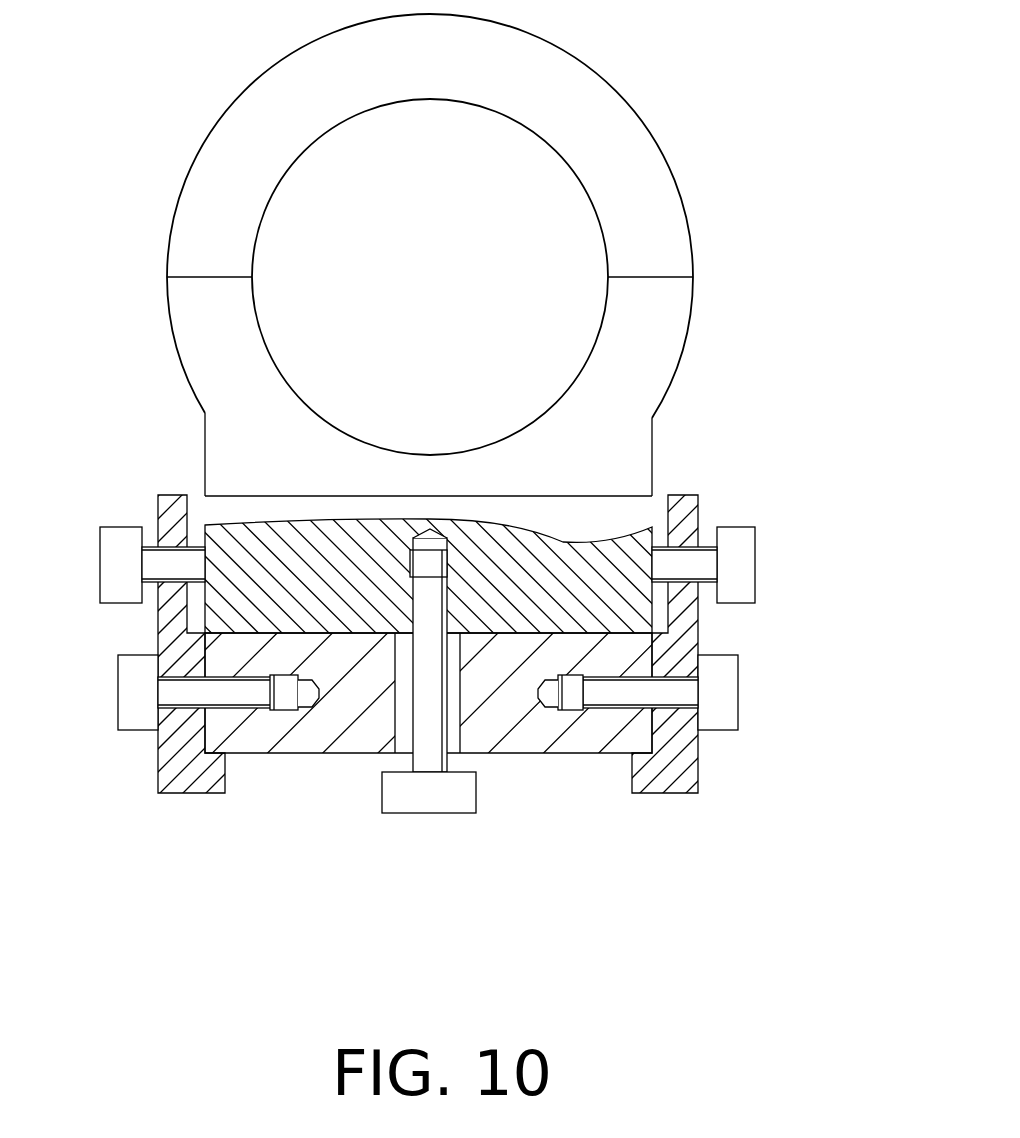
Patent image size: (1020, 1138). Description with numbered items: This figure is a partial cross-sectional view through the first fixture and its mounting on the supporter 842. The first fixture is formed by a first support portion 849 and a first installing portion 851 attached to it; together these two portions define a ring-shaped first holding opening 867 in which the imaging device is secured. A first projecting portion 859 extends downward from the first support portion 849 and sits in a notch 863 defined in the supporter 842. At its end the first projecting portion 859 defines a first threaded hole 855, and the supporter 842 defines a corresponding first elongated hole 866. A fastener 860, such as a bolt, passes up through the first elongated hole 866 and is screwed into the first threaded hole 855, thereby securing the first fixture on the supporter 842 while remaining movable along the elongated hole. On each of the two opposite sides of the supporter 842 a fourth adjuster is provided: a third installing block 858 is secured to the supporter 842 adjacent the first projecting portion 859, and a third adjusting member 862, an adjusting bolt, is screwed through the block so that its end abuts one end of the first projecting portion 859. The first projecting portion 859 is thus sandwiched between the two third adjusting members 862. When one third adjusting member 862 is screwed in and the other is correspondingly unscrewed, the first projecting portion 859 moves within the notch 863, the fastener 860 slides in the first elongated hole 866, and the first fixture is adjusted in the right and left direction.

The supporter 842 is at (267, 733).
The first support portion 849 is at (650, 325).
The first installing portion 851 is at (628, 188).
The first threaded hole 855 is at (427, 562).
The third installing block 858 is at (680, 758).
The first projecting portion 859 is at (572, 512).
The fastener 860 is at (427, 785).
The third adjusting member 862 is at (740, 568).
The notch 863 is at (350, 637).
The first elongated hole 866 is at (453, 740).
The first holding opening 867 is at (453, 150).